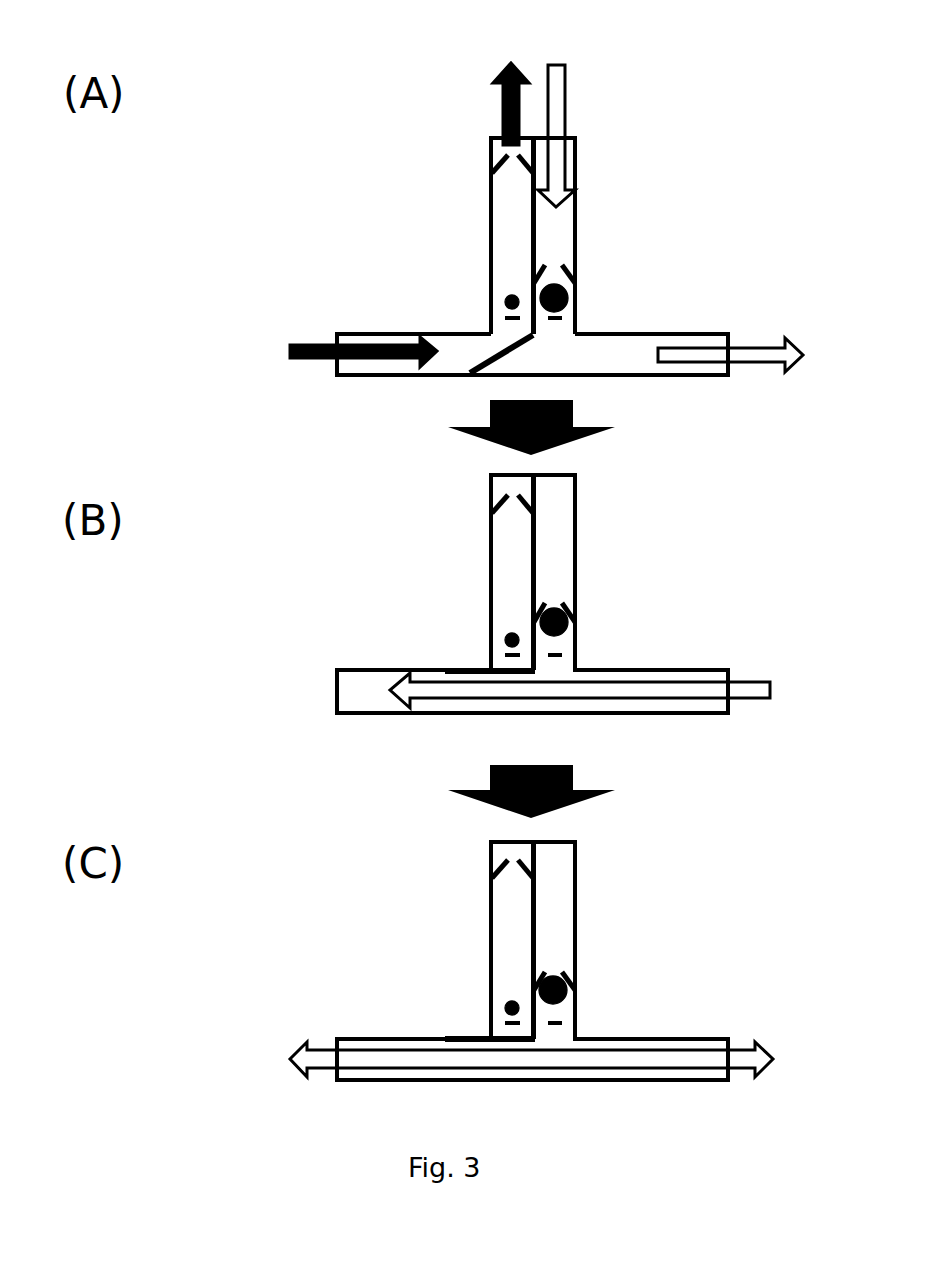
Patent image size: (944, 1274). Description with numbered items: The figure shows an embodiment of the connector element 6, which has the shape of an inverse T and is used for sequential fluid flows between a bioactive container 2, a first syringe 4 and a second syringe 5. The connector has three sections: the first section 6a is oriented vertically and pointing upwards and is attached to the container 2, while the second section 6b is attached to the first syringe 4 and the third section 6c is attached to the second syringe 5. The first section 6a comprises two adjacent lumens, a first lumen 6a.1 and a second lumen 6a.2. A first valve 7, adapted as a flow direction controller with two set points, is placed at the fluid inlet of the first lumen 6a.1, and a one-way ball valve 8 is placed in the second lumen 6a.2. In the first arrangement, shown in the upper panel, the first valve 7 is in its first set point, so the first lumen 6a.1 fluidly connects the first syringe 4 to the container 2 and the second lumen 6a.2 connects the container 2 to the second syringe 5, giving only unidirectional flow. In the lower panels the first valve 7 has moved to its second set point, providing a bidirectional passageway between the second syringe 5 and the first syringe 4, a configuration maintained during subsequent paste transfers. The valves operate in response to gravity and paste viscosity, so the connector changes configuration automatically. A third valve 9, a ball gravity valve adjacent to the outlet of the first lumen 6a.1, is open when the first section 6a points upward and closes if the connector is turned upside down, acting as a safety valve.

The container 2 is at (534, 120).
The first syringe 4 is at (346, 352).
The second syringe 5 is at (746, 355).
The connector element 6 is at (514, 227).
The first section 6a is at (475, 140).
The first lumen 6a.1 is at (485, 222).
The second lumen 6a.2 is at (579, 218).
The second section 6b is at (332, 320).
The third section 6c is at (733, 323).
The first valve 7 is at (478, 360).
The ball valve 8 is at (570, 300).
The third valve 9 is at (507, 298).